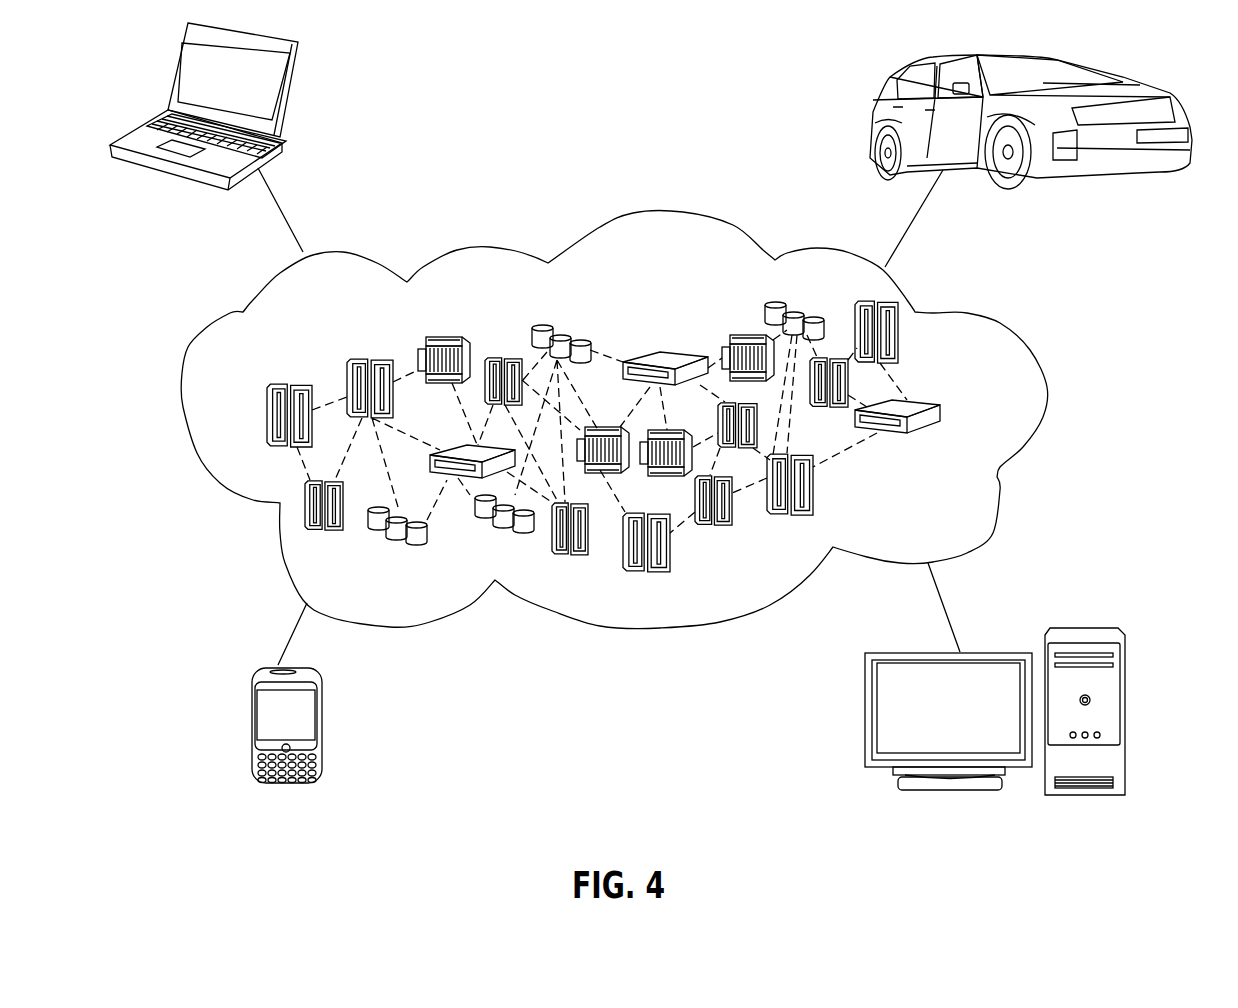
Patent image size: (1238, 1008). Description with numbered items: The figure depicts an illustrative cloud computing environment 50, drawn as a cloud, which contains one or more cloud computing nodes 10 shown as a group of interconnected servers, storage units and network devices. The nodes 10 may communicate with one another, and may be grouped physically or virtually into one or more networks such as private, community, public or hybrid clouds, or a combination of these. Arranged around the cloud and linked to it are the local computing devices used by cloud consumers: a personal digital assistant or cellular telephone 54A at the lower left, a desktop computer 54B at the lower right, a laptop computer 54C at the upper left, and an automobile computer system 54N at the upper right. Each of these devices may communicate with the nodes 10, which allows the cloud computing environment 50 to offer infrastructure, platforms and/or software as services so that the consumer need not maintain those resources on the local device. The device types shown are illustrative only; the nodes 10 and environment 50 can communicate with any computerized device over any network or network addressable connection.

The cloud computing nodes 10 is at (981, 414).
The cloud computing environment 50 is at (1010, 327).
The personal digital assistant (PDA) or cellular telephone 54A is at (250, 728).
The desktop computer 54B is at (1088, 625).
The laptop computer 54C is at (292, 92).
The automobile computer system 54N is at (879, 103).